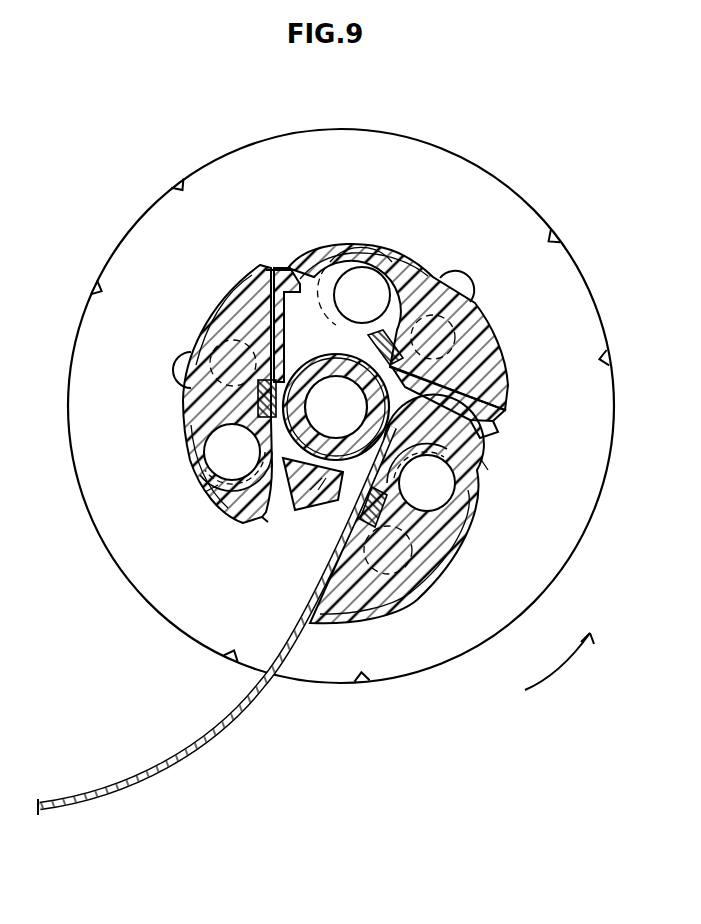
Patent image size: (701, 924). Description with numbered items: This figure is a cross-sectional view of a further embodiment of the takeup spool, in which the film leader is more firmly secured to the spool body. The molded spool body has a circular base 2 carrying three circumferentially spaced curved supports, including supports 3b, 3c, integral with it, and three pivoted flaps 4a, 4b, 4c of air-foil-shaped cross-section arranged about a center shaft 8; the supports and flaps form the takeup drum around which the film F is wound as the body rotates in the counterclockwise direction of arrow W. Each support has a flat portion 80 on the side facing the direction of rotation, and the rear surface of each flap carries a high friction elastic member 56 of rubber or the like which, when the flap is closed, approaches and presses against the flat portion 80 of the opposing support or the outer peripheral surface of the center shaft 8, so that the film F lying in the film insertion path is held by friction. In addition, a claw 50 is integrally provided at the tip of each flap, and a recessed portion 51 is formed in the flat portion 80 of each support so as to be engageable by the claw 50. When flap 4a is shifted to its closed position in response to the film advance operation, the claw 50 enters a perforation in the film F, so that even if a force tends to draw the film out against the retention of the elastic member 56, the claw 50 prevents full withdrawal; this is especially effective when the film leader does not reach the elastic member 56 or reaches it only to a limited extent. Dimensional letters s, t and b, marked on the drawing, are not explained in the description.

The circular base 2 is at (432, 662).
The center shaft 8 is at (336, 407).
The flap 4a is at (336, 603).
The flap 4b is at (223, 325).
The flap 4c is at (478, 385).
The support 3b is at (280, 334).
The support 3c is at (415, 425).
The claw 50 is at (275, 275).
The recessed portion 51 is at (281, 272).
The elastic member 56 is at (262, 392).
The flat portion 80 is at (318, 493).
The space s is at (358, 423).
The thickness t is at (214, 488).
The width b is at (336, 250).
The film F is at (198, 754).
The arrow indicating direction of rotation W is at (560, 678).